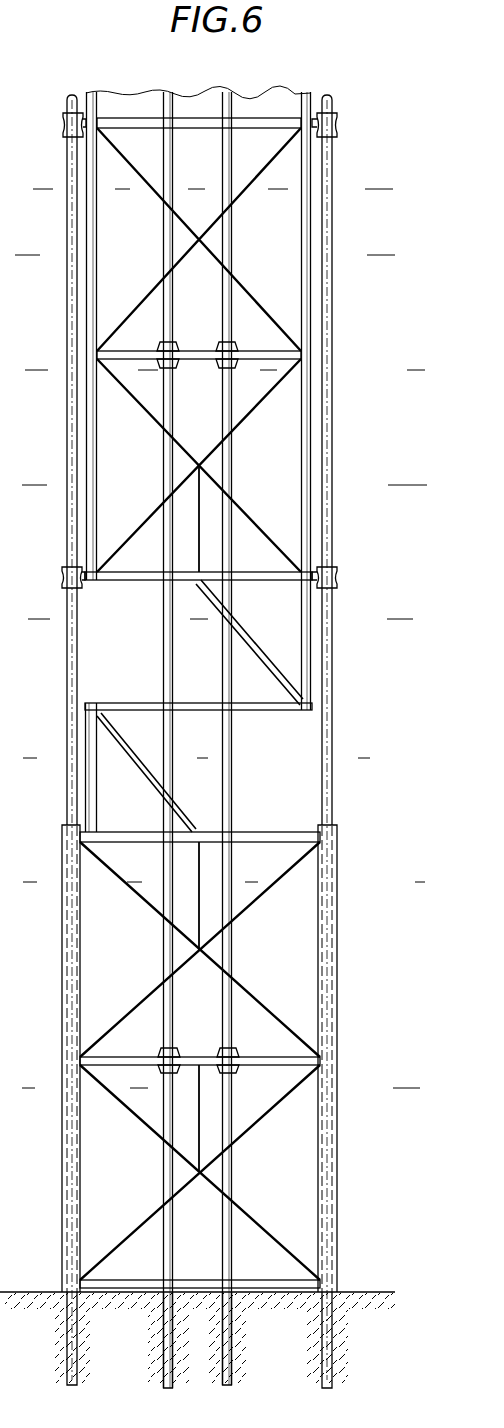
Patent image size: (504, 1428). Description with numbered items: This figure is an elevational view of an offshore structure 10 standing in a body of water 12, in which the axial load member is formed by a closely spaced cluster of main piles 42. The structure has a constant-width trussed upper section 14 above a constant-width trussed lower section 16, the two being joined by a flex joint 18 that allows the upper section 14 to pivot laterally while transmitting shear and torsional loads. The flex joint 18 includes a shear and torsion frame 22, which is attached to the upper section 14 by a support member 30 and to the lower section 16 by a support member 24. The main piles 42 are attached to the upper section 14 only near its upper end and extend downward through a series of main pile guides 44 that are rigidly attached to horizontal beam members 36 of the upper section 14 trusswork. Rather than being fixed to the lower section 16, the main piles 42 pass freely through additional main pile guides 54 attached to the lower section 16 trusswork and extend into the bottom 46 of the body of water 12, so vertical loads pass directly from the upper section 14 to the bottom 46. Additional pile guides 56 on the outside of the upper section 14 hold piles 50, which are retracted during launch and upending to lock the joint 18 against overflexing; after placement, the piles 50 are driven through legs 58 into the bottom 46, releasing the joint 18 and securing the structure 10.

The offshore structure 10 is at (390, 435).
The body of water 12 is at (413, 231).
The upper section 14 is at (85, 285).
The lower section 16 is at (350, 1050).
The flex joint 18 is at (355, 712).
The shear and torsion frame 22 is at (273, 712).
The support member 24 is at (84, 718).
The support member 30 is at (314, 688).
The horizontal beam member 36 is at (267, 360).
The main pile 42 is at (162, 643).
The main pile guide 44 is at (178, 341).
The bottom 46 is at (372, 1291).
The pile 50 is at (67, 1338).
The main pile guide 54 is at (180, 1047).
The pile guide 56 is at (66, 137).
The leg 58 is at (65, 862).